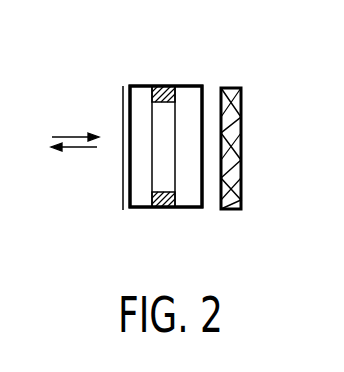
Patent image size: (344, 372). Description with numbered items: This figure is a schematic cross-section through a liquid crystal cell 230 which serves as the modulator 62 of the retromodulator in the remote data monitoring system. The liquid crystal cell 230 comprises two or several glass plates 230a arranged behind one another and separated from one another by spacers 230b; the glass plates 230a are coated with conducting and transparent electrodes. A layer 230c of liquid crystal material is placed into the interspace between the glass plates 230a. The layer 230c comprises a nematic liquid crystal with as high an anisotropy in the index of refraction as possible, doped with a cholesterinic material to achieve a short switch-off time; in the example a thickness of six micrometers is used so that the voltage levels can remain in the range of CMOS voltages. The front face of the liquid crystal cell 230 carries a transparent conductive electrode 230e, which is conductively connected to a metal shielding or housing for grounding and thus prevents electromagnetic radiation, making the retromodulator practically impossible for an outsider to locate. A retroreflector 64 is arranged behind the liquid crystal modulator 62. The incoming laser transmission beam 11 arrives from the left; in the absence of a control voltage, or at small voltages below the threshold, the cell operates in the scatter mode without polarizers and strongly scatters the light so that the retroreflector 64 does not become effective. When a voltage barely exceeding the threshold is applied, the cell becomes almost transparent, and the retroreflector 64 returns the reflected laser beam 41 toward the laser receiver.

The liquid crystal cell 230 is at (104, 217).
The modulator 62 is at (166, 146).
The glass plates 230a is at (182, 208).
The spacers 230b is at (160, 86).
The layer of liquid crystal material 230c is at (162, 160).
The transparent conductive electrode 230e is at (122, 88).
The retroreflector 64 is at (243, 134).
The laser transmission beam 11 is at (62, 136).
The reflected laser beam 41 is at (84, 149).